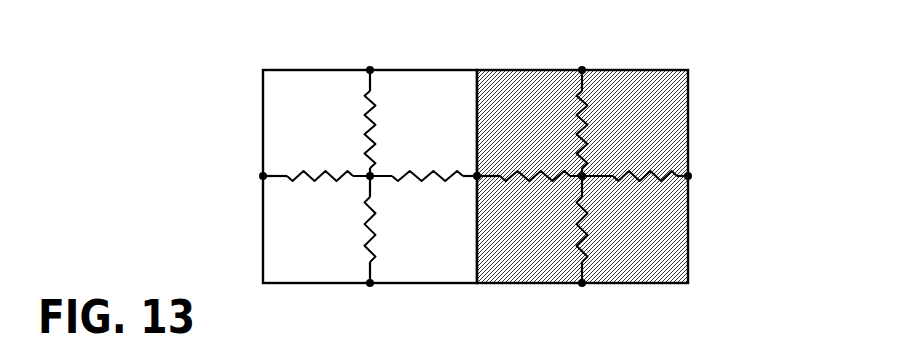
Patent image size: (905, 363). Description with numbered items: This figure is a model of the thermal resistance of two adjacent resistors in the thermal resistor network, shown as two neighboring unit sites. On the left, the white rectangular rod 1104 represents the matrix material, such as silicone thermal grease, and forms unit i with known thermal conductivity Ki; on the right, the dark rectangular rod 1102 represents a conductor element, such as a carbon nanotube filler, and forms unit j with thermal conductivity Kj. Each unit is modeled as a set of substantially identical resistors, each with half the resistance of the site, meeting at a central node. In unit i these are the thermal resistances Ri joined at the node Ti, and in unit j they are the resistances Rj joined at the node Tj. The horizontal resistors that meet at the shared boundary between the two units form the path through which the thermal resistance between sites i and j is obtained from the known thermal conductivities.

The white rectangular rod 1104 is at (262, 284).
The dark rectangular rod 1102 is at (689, 284).
The thermal resistance of a resistor Ri is at (373, 176).
The temperature node of unit i Ti is at (353, 193).
The thermal resistors of unit j Rj is at (587, 176).
The temperature node of unit j Tj is at (567, 193).